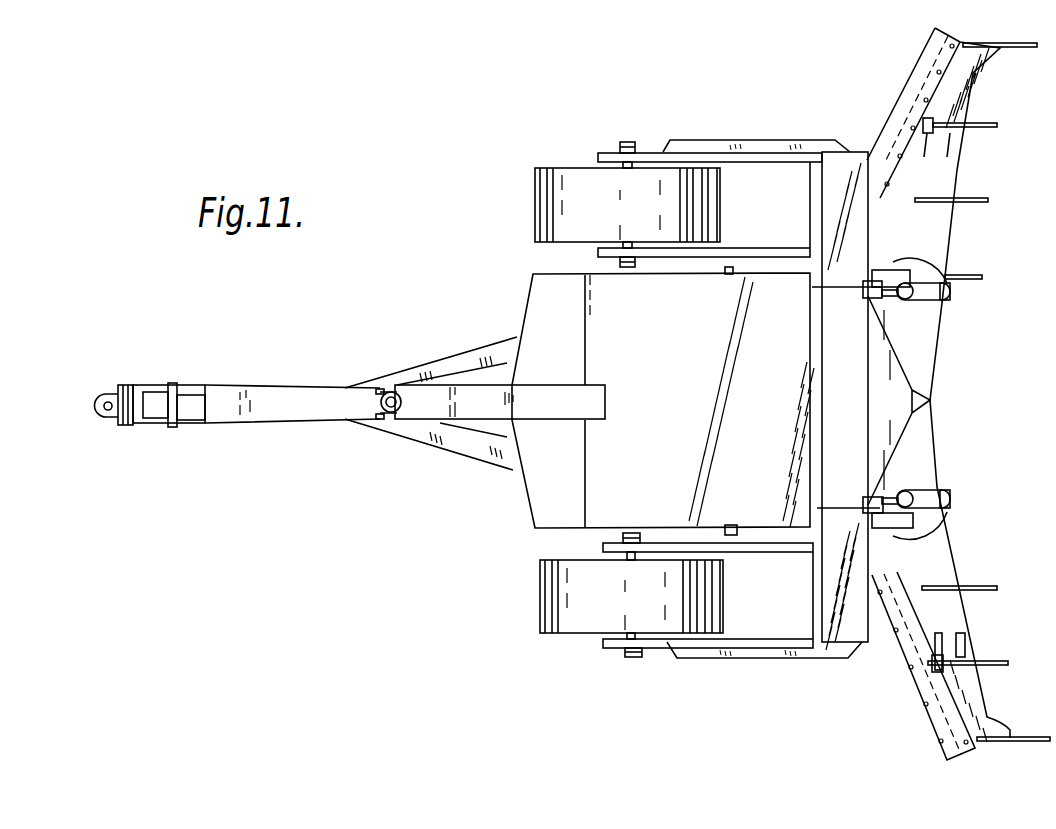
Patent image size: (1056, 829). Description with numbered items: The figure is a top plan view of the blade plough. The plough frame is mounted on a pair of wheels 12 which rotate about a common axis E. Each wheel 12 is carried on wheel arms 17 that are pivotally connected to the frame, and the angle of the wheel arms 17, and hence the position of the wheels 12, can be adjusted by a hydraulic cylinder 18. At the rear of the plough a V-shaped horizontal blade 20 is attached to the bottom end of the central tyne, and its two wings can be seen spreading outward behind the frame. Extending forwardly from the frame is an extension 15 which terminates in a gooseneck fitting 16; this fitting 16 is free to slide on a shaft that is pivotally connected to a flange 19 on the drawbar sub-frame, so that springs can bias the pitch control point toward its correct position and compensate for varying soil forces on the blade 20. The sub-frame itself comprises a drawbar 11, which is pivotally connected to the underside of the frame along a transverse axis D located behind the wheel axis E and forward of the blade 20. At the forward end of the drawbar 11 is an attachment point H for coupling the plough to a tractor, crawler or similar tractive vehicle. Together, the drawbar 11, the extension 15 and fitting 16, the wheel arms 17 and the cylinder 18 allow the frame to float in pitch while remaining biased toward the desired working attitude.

The drawbar 11 is at (290, 392).
The wheels 12 is at (553, 207).
The extension 15 is at (484, 406).
The gooseneck fitting 16 is at (401, 416).
The wheel arms 17 is at (755, 642).
The hydraulic cylinder 18 is at (925, 287).
The flange 19 is at (376, 417).
The V-shaped horizontal blade 20 is at (907, 677).
The attachment point H is at (124, 385).
The transverse axis D is at (732, 535).
The wheel axis E is at (627, 658).